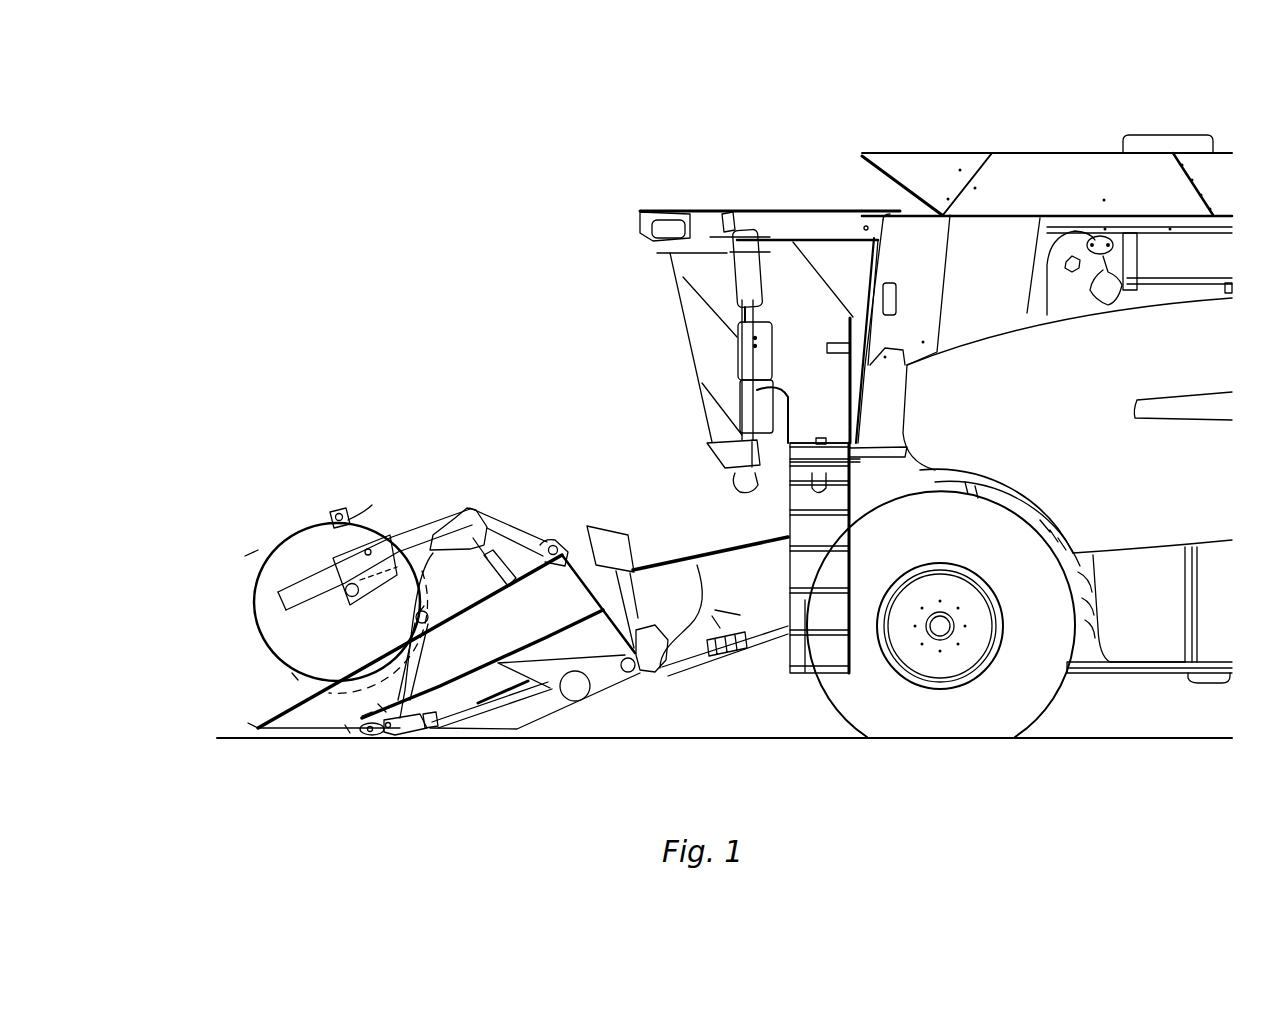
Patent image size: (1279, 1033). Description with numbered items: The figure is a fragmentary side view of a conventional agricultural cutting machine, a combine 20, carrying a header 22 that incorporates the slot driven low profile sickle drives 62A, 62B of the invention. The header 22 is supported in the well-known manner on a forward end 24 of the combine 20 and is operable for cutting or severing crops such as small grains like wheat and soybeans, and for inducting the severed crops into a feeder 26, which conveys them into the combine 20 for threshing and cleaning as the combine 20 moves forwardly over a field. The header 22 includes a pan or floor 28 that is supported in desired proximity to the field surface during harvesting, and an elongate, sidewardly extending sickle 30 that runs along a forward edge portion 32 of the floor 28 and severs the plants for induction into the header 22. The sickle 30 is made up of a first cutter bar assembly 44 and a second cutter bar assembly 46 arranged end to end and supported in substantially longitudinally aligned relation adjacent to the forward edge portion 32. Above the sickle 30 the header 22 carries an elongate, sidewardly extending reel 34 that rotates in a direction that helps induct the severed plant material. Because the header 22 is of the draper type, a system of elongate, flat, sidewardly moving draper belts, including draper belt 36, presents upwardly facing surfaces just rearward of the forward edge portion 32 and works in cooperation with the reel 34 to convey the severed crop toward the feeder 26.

The combine 20 is at (1072, 128).
The header 22 is at (505, 522).
The forward end 24 is at (594, 526).
The feeder 26 is at (670, 557).
The floor 28 is at (476, 702).
The draper belt 36 is at (472, 700).
The sickle 30 is at (393, 776).
The first cutter bar assembly 44 is at (393, 776).
The second cutter bar assembly 46 is at (360, 740).
The forward edge portion 32 is at (405, 706).
The reel 34 is at (340, 509).
The slot driven low profile sickle drive 62A is at (255, 699).
The slot driven low profile sickle drive 62B is at (370, 716).